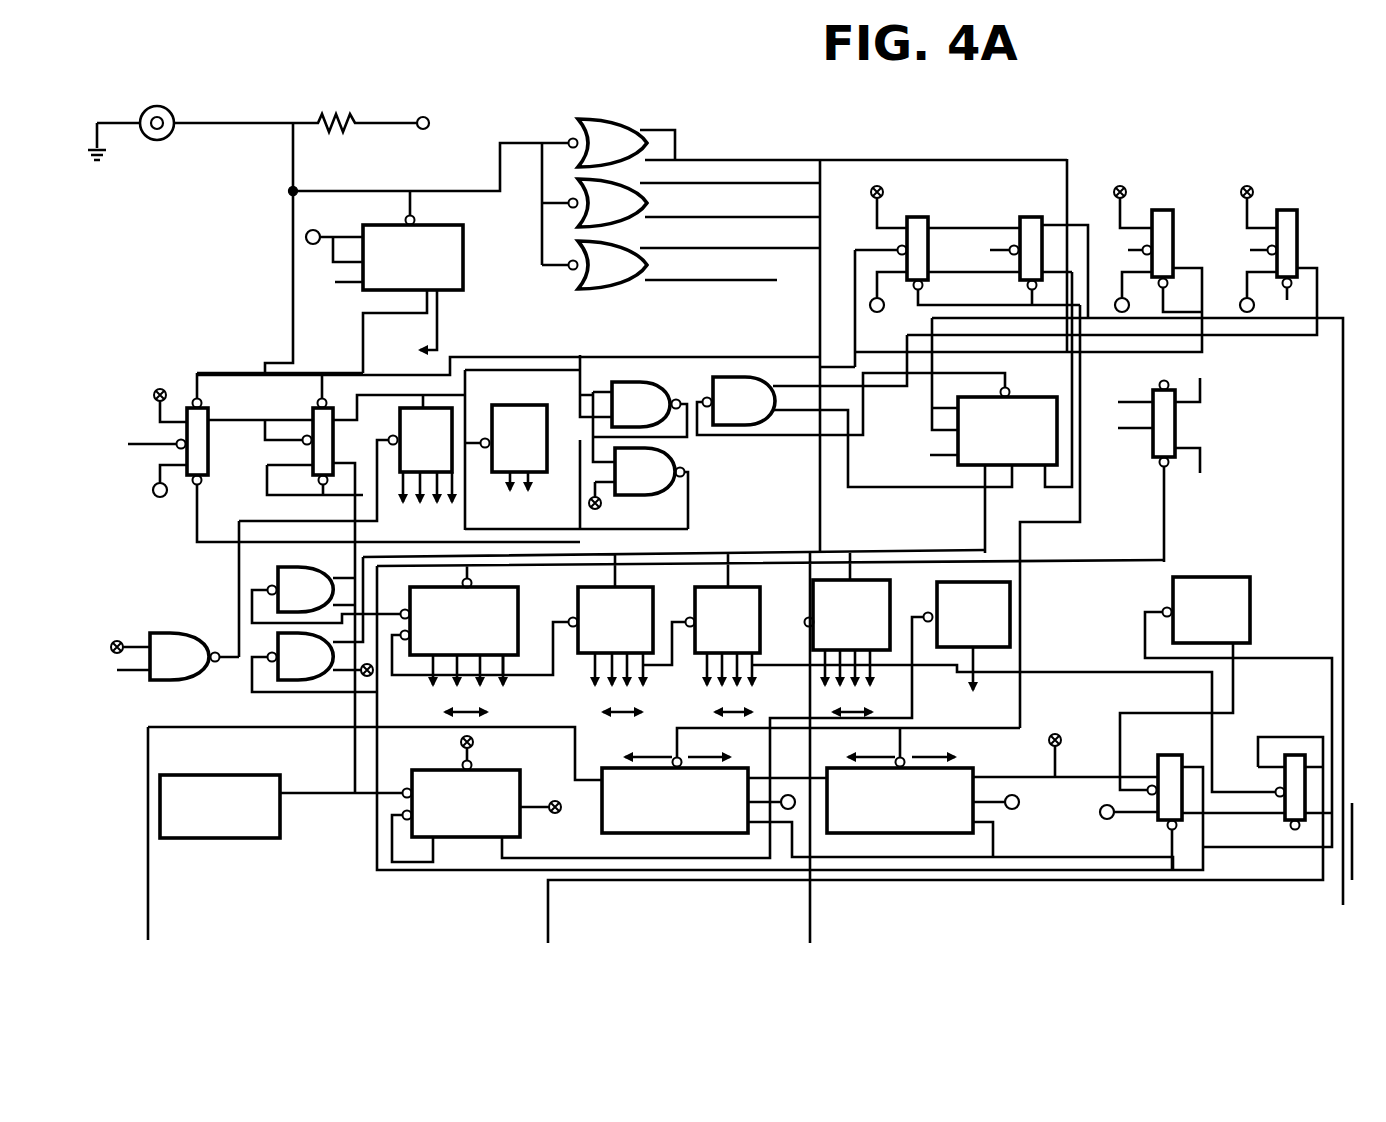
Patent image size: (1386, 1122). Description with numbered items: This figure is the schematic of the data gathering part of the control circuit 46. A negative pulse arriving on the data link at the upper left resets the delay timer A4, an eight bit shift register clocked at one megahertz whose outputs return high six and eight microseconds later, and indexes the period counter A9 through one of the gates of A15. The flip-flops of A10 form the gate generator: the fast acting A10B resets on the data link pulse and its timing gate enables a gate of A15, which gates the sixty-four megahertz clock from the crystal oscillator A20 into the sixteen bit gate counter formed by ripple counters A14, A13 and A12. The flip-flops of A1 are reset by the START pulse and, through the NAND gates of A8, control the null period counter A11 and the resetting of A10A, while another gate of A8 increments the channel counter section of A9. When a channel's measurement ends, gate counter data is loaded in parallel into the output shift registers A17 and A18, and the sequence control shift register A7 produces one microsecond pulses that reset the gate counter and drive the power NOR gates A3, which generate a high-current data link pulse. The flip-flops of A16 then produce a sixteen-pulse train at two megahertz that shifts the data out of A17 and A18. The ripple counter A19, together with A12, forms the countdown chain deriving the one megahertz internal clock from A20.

The control circuit 46 is at (714, 516).
The flip-flops of A1 is at (1241, 214).
The power NOR gates A3 is at (576, 205).
The shift register / delay timer A4 is at (413, 257).
The sequence control shift register A7 is at (1007, 431).
The NAND gates A8 is at (693, 431).
The ripple counter A9 is at (426, 440).
The flip-flops of A10 is at (260, 460).
The null period counter A11 is at (1232, 610).
The ripple counter A12 is at (911, 607).
The ripple counter A13 is at (615, 620).
The ripple counter A14 is at (464, 621).
The NAND gates A15 is at (289, 615).
The timing and control flip-flops A16 is at (1226, 797).
The output data shift register A17 is at (900, 800).
The output data shift register A18 is at (675, 800).
The ripple counter A19 is at (466, 803).
The high frequency clock oscillator A20 is at (225, 792).